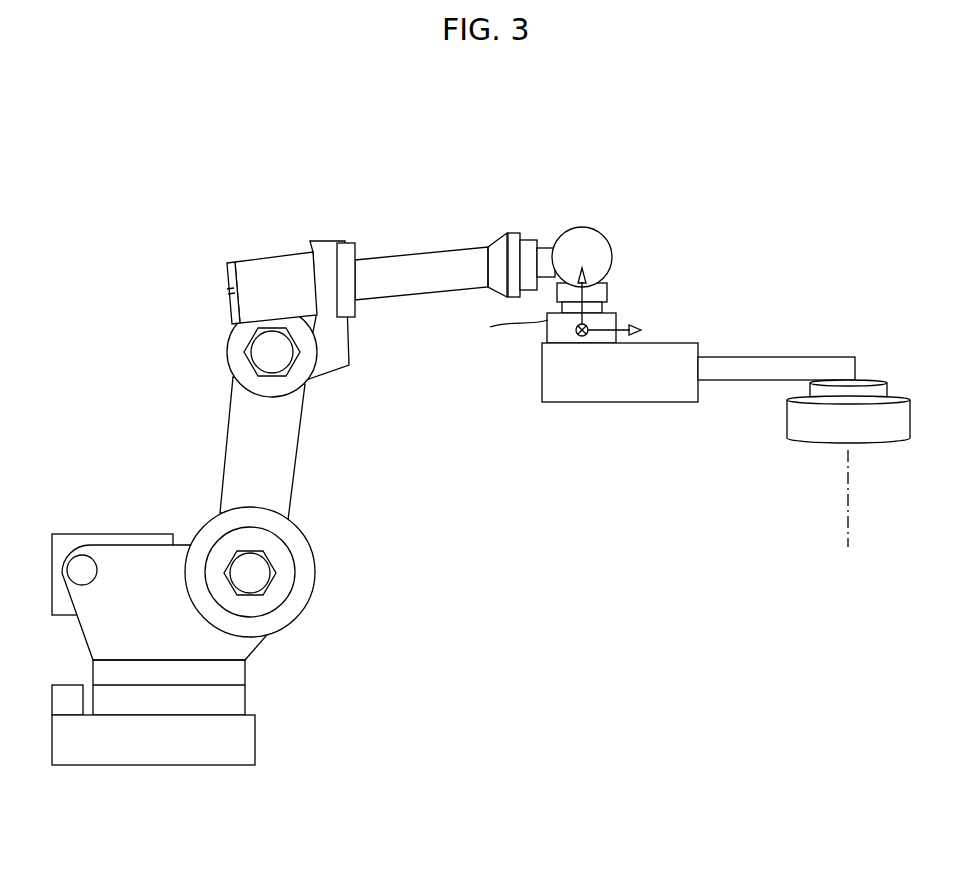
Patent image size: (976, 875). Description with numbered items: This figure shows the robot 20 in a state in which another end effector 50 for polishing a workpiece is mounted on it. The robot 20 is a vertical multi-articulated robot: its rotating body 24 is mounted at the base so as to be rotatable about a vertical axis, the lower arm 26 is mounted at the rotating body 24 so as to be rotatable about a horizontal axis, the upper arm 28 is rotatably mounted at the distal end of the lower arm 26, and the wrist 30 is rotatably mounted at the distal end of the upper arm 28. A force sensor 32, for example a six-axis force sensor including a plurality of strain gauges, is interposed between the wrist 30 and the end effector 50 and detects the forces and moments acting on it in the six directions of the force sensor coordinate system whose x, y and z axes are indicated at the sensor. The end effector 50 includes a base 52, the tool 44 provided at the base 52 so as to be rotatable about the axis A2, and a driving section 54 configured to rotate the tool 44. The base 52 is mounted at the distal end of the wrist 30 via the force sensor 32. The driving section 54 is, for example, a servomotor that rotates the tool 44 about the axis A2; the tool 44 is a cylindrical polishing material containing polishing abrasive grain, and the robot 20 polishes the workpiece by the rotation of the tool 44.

The robot 20 is at (175, 192).
The rotating body 24 is at (157, 617).
The lower arm 26 is at (275, 459).
The upper arm 28 is at (417, 258).
The wrist 30 is at (607, 293).
The force sensor 32 is at (617, 315).
The end effector 50 is at (678, 455).
The base 52 is at (578, 390).
The driving section 54 is at (888, 387).
The tool 44 is at (900, 424).
The axis A2 is at (843, 498).